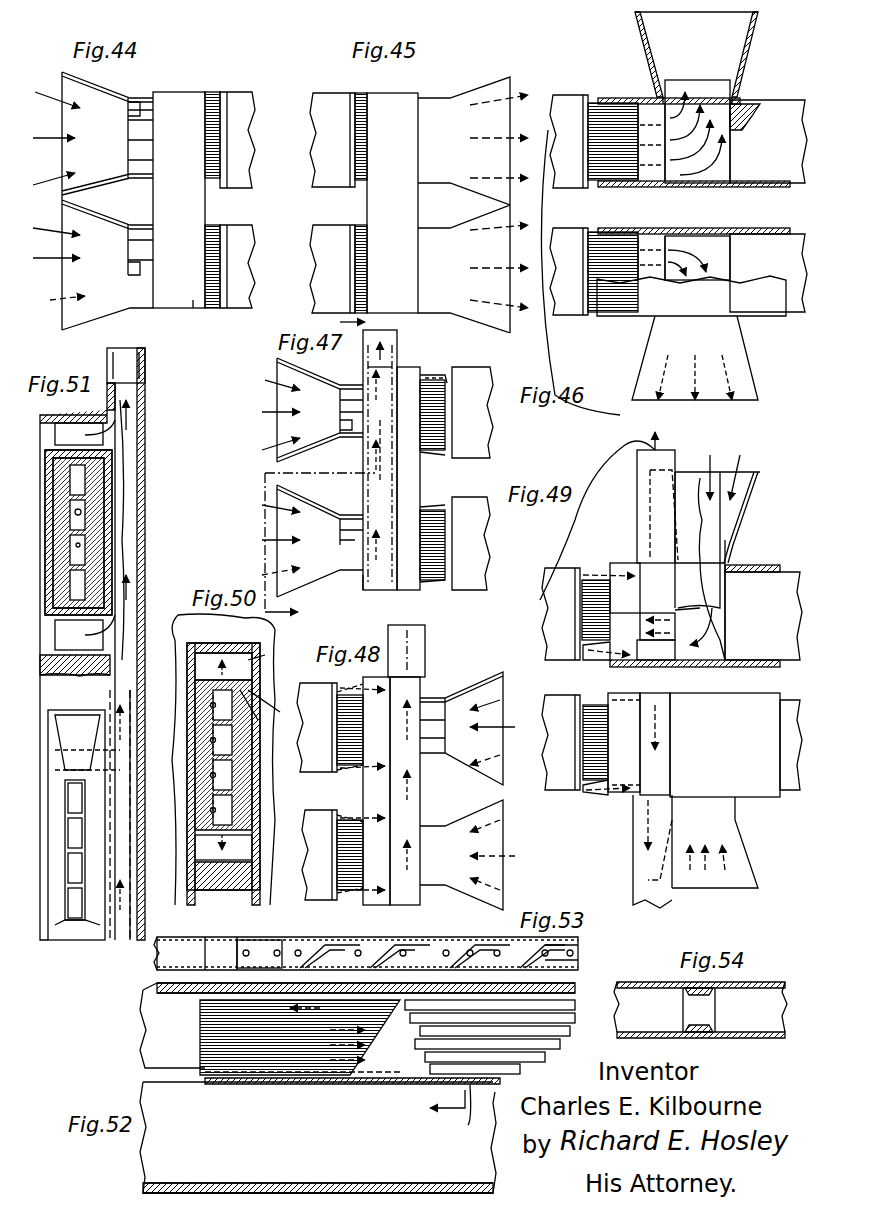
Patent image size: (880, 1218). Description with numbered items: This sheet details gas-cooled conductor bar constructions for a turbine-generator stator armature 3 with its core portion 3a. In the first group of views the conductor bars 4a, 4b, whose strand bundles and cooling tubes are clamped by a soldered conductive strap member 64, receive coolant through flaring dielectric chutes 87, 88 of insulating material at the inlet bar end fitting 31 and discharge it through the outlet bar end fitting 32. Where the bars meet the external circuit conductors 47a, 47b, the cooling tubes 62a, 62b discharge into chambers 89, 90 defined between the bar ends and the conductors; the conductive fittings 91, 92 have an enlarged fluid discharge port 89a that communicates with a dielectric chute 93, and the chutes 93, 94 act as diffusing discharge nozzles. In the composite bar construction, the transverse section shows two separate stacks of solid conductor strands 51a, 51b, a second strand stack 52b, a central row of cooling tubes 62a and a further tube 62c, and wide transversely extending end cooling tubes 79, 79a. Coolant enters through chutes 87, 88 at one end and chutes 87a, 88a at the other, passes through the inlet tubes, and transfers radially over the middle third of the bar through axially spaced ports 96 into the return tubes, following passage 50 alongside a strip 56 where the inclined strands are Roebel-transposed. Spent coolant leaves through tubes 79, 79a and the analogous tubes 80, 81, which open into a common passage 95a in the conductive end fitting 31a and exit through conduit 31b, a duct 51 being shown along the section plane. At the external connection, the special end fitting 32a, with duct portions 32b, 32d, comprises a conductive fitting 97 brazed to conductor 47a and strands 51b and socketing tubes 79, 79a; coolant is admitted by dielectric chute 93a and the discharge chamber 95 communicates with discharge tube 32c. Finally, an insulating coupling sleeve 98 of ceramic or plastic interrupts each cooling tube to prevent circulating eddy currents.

In FIG. 50, the stator armature 3 is at (178, 632).
In FIG. 51, the stator armature 3 is at (137, 942).
In FIG. 52, the armature core portion 3a is at (143, 1186).
In FIG. 44, the conductor bar 4a is at (254, 110).
In FIG. 45, the conductor bar 4a is at (313, 165).
In FIG. 46, the conductor bar 4a is at (562, 93).
In FIG. 47, the conductor bar 4a is at (495, 415).
In FIG. 48, the conductor bar 4a is at (317, 727).
In FIG. 49, the conductor bar 4a is at (561, 614).
In FIG. 52, the conductor bar 4a is at (140, 1050).
In FIG. 53, the conductor bar 4a is at (190, 935).
In FIG. 44, the conductor bar 4b is at (255, 268).
In FIG. 46, the conductor bar 4b is at (565, 318).
In FIG. 47, the conductor bar 4b is at (492, 546).
In FIG. 48, the conductor bar 4b is at (319, 855).
In FIG. 49, the conductor bar 4b is at (561, 742).
In FIG. 52, the conductor bar 4b is at (140, 1100).
In FIG. 44, the bar end fitting 31 is at (150, 312).
In FIG. 47, the conductive end fitting 31a is at (360, 576).
In FIG. 48, the conductive end fitting 31a is at (425, 690).
In FIG. 47, the conduit 31b is at (390, 342).
In FIG. 51, the conduit 31b is at (140, 365).
In FIG. 45, the bar end fitting 32 is at (422, 94).
In FIG. 49, the special end fitting 32a is at (745, 555).
In FIG. 49, the duct portion of end fitting 32b is at (740, 808).
In FIG. 49, the coolant discharge tube 32c is at (640, 498).
In FIG. 49, the duct portion of end fitting 32d is at (633, 836).
In FIG. 46, the external circuit conductor 47a is at (790, 100).
In FIG. 49, the external circuit conductor 47a is at (792, 572).
In FIG. 46, the external circuit conductor 47b is at (795, 234).
In FIG. 49, the external circuit conductor 47b is at (790, 792).
In FIG. 52, the coolant passage 50 is at (437, 1102).
In FIG. 47, the duct of end fitting 51 is at (325, 467).
In FIG. 48, the duct of end fitting 51 is at (376, 791).
In FIG. 50, the solid conductor strands 51a is at (255, 775).
In FIG. 52, the solid conductor strands 51a is at (232, 1050).
In FIG. 53, the solid conductor strands 51a is at (372, 955).
In FIG. 44, the solid conductor strands 51b is at (214, 92).
In FIG. 45, the solid conductor strands 51b is at (360, 92).
In FIG. 46, the solid conductor strands 51b is at (610, 103).
In FIG. 47, the solid conductor strands 51b is at (440, 410).
In FIG. 48, the solid conductor strands 51b is at (350, 730).
In FIG. 49, the solid conductor strands 51b is at (590, 582).
In FIG. 50, the solid conductor strands 51b is at (205, 765).
In FIG. 51, the solid conductor strands 51b is at (100, 480).
In FIG. 53, the solid conductor strands 51b is at (398, 945).
In FIG. 44, the conductor strands 52b is at (212, 309).
In FIG. 46, the conductor strands 52b is at (610, 232).
In FIG. 47, the conductor strands 52b is at (440, 556).
In FIG. 49, the conductor strands 52b is at (596, 735).
In FIG. 53, the strand insulation strip 56 is at (497, 940).
In FIG. 44, the cooling tube 62a is at (128, 140).
In FIG. 46, the cooling tube 62a is at (660, 140).
In FIG. 47, the cooling tube 62a is at (342, 432).
In FIG. 50, the cooling tube 62a is at (210, 705).
In FIG. 51, the cooling tube 62a is at (82, 512).
In FIG. 52, the cooling tube 62a is at (520, 1058).
In FIG. 53, the cooling tube 62a is at (578, 950).
In FIG. 54, the cooling tube 62a is at (633, 982).
In FIG. 44, the cooling tube 62b is at (128, 272).
In FIG. 46, the cooling tube 62b is at (658, 262).
In FIG. 47, the cooling tube 62b is at (340, 524).
In FIG. 51, the cooling tube 62b is at (78, 868).
In FIG. 51, the cooling tube 62c is at (82, 540).
In FIG. 44, the conductive strap member 64 is at (193, 309).
In FIG. 47, the end cooling tube 79 is at (436, 375).
In FIG. 48, the end cooling tube 79 is at (340, 684).
In FIG. 49, the end cooling tube 79 is at (597, 563).
In FIG. 50, the end cooling tube 79 is at (196, 668).
In FIG. 51, the end cooling tube 79 is at (85, 435).
In FIG. 52, the end cooling tube 79 is at (205, 1008).
In FIG. 53, the end cooling tube 79 is at (258, 940).
In FIG. 47, the end cooling tube 79a is at (445, 455).
In FIG. 48, the end cooling tube 79a is at (350, 768).
In FIG. 49, the end cooling tube 79a is at (585, 658).
In FIG. 50, the end cooling tube 79a is at (196, 852).
In FIG. 51, the end cooling tube 79a is at (70, 665).
In FIG. 52, the end cooling tube 79a is at (205, 1080).
In FIG. 47, the discharge tube 80 is at (440, 505).
In FIG. 48, the discharge tube 80 is at (350, 816).
In FIG. 49, the discharge tube 80 is at (612, 672).
In FIG. 51, the discharge tube 80 is at (78, 750).
In FIG. 47, the discharge tube 81 is at (440, 582).
In FIG. 48, the discharge tube 81 is at (347, 892).
In FIG. 49, the discharge tube 81 is at (590, 790).
In FIG. 51, the discharge tube 81 is at (58, 942).
In FIG. 44, the dielectric chute 87 is at (91, 80).
In FIG. 47, the dielectric chute 87 is at (310, 372).
In FIG. 45, the dielectric chute 87a is at (508, 77).
In FIG. 48, the dielectric chute 87a is at (490, 680).
In FIG. 44, the dielectric chute 88 is at (62, 322).
In FIG. 47, the dielectric chute 88 is at (320, 515).
In FIG. 51, the dielectric chute 88 is at (90, 942).
In FIG. 45, the dielectric chute 88a is at (462, 321).
In FIG. 48, the dielectric chute 88a is at (472, 818).
In FIG. 46, the chamber 89 is at (718, 165).
In FIG. 46, the fluid discharge port 89a is at (730, 98).
In FIG. 46, the chamber 90 is at (720, 252).
In FIG. 46, the conductive fitting 91 is at (720, 188).
In FIG. 46, the conductive fitting 92 is at (712, 228).
In FIG. 46, the dielectric chute 93 is at (752, 30).
In FIG. 49, the dielectric chute 93a is at (755, 500).
In FIG. 46, the dielectric chute 94 is at (745, 365).
In FIG. 49, the discharge chamber 95 is at (655, 660).
In FIG. 47, the common passage 95a is at (395, 398).
In FIG. 51, the common passage 95a is at (128, 541).
In FIG. 50, the ports 96 is at (265, 655).
In FIG. 52, the ports 96 is at (466, 1112).
In FIG. 53, the ports 96 is at (298, 950).
In FIG. 49, the conductive fitting 97 is at (735, 667).
In FIG. 54, the insulating coupling sleeve 98 is at (690, 1000).